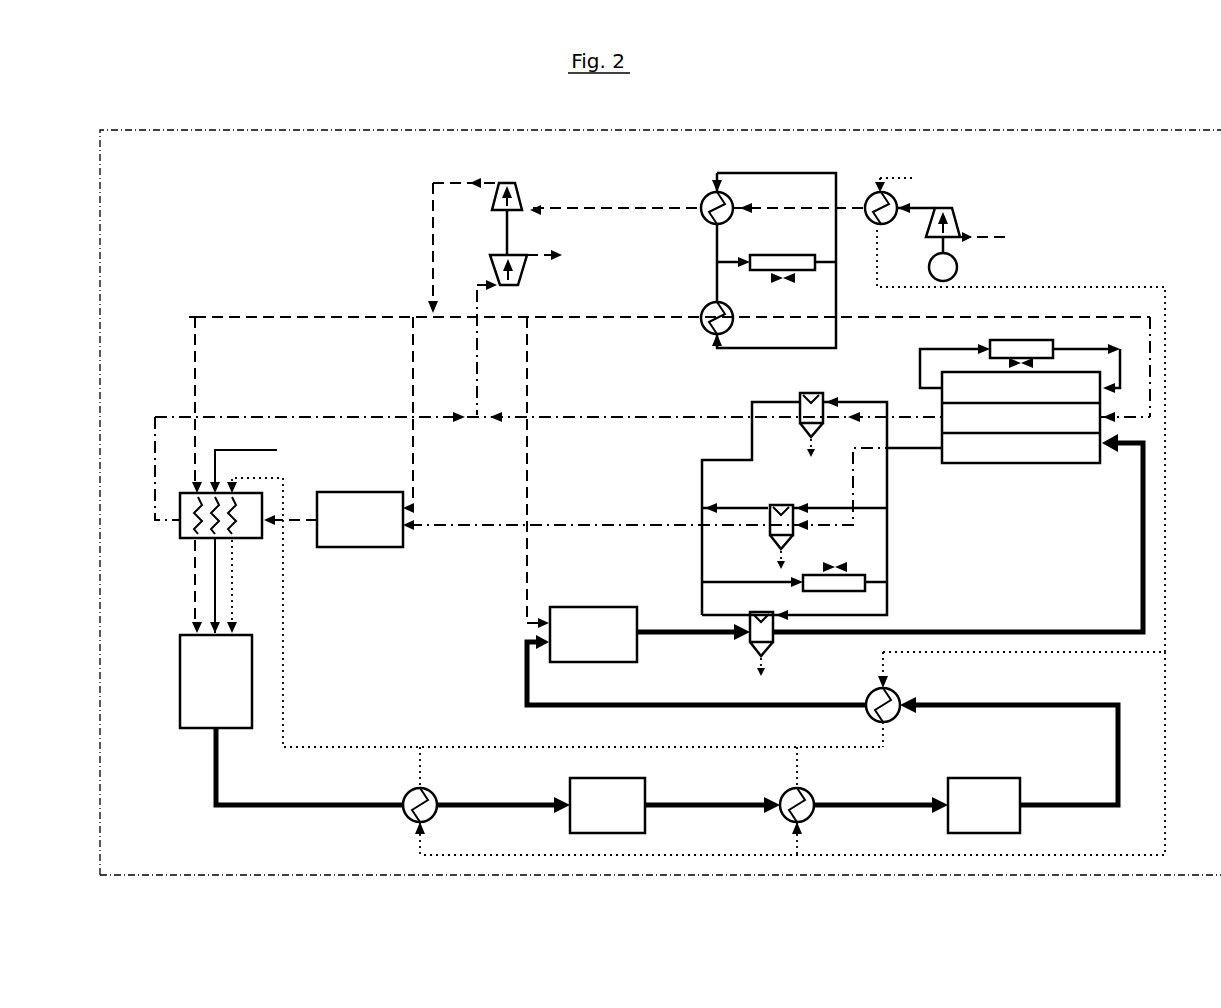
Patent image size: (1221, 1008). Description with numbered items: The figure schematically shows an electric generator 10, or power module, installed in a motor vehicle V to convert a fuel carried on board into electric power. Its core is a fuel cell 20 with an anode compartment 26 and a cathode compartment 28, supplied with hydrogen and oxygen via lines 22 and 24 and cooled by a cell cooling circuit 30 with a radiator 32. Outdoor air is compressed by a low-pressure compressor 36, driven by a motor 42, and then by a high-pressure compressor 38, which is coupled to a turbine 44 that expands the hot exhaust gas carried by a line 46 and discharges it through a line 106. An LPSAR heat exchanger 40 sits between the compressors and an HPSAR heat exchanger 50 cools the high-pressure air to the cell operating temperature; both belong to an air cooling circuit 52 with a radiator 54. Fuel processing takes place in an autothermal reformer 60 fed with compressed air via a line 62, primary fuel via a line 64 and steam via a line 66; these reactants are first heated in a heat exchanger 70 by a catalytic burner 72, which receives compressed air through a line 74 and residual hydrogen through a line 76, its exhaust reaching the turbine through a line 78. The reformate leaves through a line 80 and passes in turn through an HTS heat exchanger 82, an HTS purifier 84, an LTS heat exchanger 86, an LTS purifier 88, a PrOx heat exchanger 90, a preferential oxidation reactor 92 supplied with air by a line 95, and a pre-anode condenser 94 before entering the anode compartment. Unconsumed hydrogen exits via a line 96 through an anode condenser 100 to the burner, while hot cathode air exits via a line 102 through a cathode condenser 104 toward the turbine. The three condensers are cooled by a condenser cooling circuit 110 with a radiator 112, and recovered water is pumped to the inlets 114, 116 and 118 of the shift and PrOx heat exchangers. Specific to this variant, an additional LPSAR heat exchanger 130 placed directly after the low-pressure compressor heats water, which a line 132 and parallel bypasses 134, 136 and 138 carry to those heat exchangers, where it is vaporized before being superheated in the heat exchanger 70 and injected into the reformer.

The motor vehicle V is at (372, 130).
The generator 10 is at (266, 258).
The fuel cell 20 is at (1035, 465).
The hydrogen supply line 22 is at (1140, 550).
The oxygen supply line 24 is at (600, 318).
The anode compartment 26 is at (1018, 449).
The cathode compartment 28 is at (1018, 419).
The cell cooling circuit 30 is at (1120, 348).
The radiator 32 is at (1018, 345).
The low-pressure compressor 36 is at (972, 215).
The high-pressure compressor 38 is at (517, 192).
The LPSAR heat exchanger 40 is at (701, 215).
The motor 42 is at (930, 270).
The turbine 44 is at (527, 278).
The exhaust gas line 46 is at (645, 416).
The HPSAR heat exchanger 50 is at (701, 325).
The air cooling circuit 52 is at (768, 335).
The radiator 54 is at (780, 257).
The reformer 60 is at (205, 685).
The compressed air line 62 is at (198, 367).
The primary fuel line 64 is at (277, 450).
The water line 66 is at (283, 478).
The heat exchanger 70 is at (185, 537).
The catalytic burner 72 is at (365, 545).
The burner air line 74 is at (413, 365).
The residual hydrogen line 76 is at (568, 522).
The burner exhaust line 78 is at (232, 416).
The reformate line 80 is at (213, 770).
The HTS heat exchanger 82 is at (403, 818).
The HTS purifier 84 is at (632, 805).
The LTS heat exchanger 86 is at (785, 790).
The LTS purifier 88 is at (980, 780).
The PrOx heat exchanger 90 is at (903, 700).
The preferential oxidation reactor 92 is at (578, 608).
The pre-anode condenser 94 is at (745, 640).
The PrOx air line 95 is at (530, 465).
The anode outlet line 96 is at (900, 450).
The anode condenser 100 is at (775, 520).
The cathode outlet line 102 is at (898, 412).
The cathode condenser 104 is at (823, 395).
The turbine exhaust line 106 is at (548, 255).
The condenser cooling circuit 110 is at (712, 490).
The radiator 112 is at (870, 570).
The HTS heat exchanger inlet 114 is at (432, 820).
The LTS heat exchanger inlet 116 is at (808, 818).
The PrOx heat exchanger inlet 118 is at (876, 685).
The additional LPSAR heat exchanger 130 is at (897, 200).
The water line 132 is at (985, 290).
The bypass 134 is at (418, 830).
The bypass 136 is at (780, 820).
The bypass 138 is at (1072, 652).